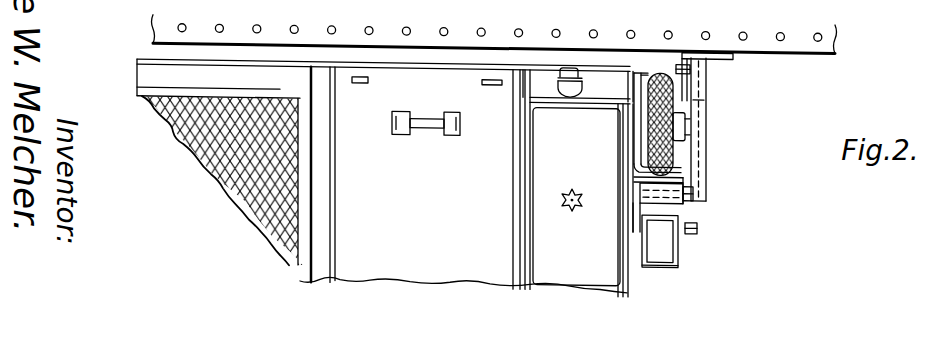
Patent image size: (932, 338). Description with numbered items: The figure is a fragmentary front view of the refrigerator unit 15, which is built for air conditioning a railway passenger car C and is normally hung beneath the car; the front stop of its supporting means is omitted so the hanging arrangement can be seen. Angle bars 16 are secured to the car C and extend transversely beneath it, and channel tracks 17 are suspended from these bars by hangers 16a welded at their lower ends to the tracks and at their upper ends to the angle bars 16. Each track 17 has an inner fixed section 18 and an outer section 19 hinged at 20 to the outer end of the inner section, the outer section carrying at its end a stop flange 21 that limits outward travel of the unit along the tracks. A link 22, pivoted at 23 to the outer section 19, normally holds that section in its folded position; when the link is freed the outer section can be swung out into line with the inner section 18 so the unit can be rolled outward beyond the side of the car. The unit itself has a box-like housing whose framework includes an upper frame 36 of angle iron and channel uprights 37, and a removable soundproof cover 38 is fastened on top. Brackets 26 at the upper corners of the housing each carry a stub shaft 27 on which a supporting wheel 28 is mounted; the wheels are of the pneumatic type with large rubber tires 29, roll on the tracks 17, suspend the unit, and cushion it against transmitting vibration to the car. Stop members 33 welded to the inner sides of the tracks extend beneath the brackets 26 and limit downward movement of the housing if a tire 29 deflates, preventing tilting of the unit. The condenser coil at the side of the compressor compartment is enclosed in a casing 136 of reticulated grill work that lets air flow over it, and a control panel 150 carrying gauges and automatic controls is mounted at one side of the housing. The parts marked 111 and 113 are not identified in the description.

The railway passenger car C is at (836, 45).
The cover 38 is at (414, 63).
The upper frame 36 is at (145, 81).
The casing 136 is at (233, 187).
The channel uprights 37 is at (322, 72).
The refrigerator unit 15 is at (302, 271).
The door panel 113 is at (427, 210).
The hinge tabs 111 is at (486, 86).
The brackets 26 is at (624, 100).
The control panel 150 is at (572, 156).
The stop members 33 is at (648, 197).
The inner fixed section 18 is at (616, 212).
The pneumatic rubber tires 29 is at (676, 164).
The supporting wheel 28 is at (678, 153).
The stub shaft 27 is at (688, 130).
The angle bars 16 is at (728, 56).
The hangers 16a is at (708, 112).
The link 22 is at (706, 102).
The hinge 20 is at (700, 196).
The pivot 23 is at (699, 226).
The outer section 19 is at (648, 257).
The stop flange 21 is at (662, 268).
The channel tracks 17 is at (718, 183).